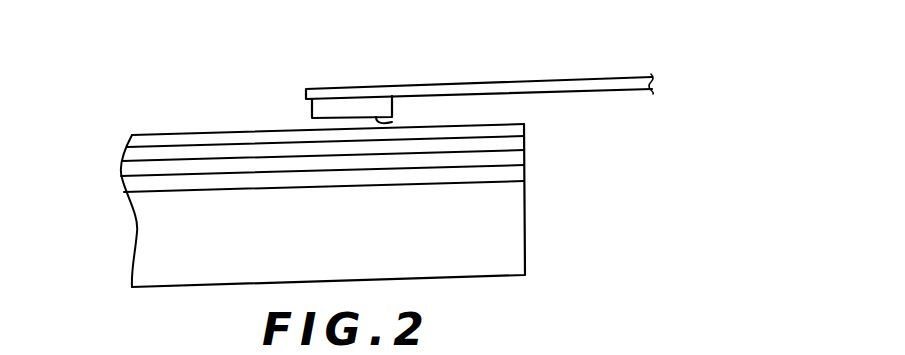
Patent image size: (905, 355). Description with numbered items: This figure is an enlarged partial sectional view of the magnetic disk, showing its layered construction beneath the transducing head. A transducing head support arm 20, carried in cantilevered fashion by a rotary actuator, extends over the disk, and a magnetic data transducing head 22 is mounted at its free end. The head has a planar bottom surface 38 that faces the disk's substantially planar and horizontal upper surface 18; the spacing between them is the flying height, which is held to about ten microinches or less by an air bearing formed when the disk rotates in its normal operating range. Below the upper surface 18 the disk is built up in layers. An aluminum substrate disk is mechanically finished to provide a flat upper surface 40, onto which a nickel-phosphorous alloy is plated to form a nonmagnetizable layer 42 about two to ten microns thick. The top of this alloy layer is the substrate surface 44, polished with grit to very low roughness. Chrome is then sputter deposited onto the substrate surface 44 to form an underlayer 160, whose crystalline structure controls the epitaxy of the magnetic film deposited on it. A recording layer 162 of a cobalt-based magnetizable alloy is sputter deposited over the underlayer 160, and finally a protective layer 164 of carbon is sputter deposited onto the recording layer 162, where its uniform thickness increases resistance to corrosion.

The upper surface 18 is at (243, 133).
The transducing head support arm 20 is at (610, 78).
The magnetic data transducing head 22 is at (352, 101).
The planar bottom surface 38 is at (392, 122).
The upper surface of substrate disk 40 is at (508, 181).
The nonmagnetizable layer 42 is at (445, 177).
The substrate surface 44 is at (508, 163).
The underlayer 160 is at (126, 172).
The recording layer 162 is at (508, 143).
The protective layer 164 is at (168, 142).